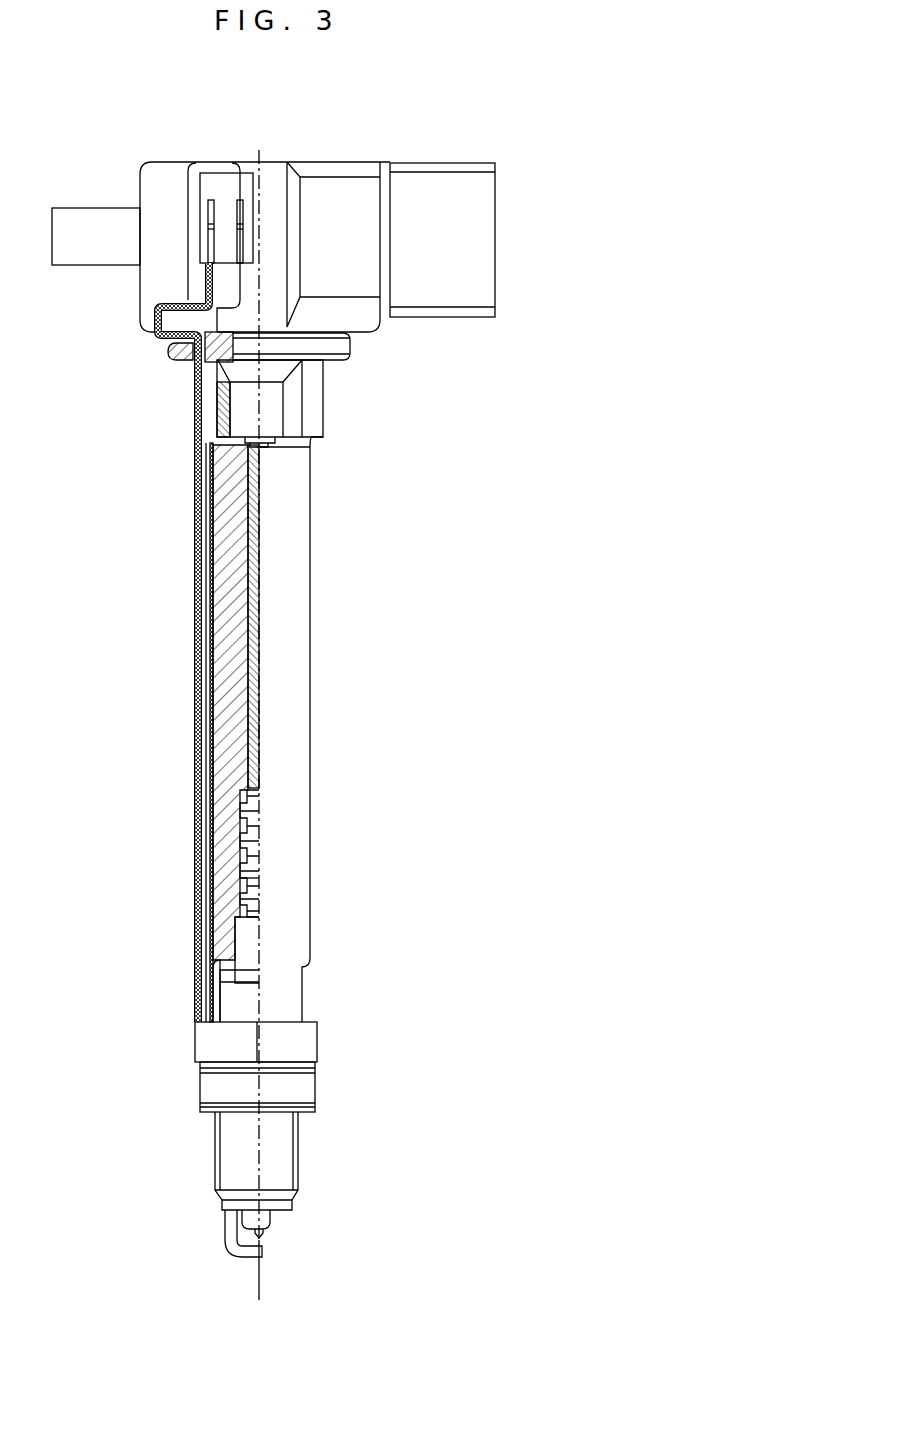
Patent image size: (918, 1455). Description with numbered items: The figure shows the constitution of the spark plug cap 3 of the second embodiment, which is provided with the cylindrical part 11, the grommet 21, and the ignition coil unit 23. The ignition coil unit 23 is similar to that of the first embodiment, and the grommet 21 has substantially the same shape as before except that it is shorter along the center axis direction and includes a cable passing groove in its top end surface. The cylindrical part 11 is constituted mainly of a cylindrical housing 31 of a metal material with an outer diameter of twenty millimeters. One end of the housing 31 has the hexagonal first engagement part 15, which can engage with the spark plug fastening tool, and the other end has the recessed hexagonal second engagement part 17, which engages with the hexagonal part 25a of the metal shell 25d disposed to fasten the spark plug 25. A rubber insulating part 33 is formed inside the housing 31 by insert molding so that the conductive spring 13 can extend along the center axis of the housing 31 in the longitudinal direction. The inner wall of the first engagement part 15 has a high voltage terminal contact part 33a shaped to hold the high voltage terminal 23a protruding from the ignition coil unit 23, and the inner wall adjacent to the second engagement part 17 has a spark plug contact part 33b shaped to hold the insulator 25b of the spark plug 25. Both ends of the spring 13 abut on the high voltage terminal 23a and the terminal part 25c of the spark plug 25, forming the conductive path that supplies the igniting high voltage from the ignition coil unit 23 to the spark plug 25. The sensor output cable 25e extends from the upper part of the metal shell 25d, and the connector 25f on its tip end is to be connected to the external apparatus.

The spark plug cap 3 is at (525, 166).
The cylindrical part 11 is at (352, 664).
The spring 13 is at (200, 525).
The first engagement part 15 is at (292, 425).
The second engagement part 17 is at (217, 1001).
The grommet 21 is at (193, 358).
The ignition coil unit 23 is at (158, 195).
The high voltage terminal 23a is at (272, 395).
The spark plug 25 is at (168, 1185).
The hexagonal part 25a is at (240, 1003).
The insulator 25b is at (250, 877).
The terminal part 25c is at (250, 802).
The metal shell 25d is at (208, 1042).
The sensor output cable 25e is at (147, 340).
The connector 25f is at (232, 183).
The housing 31 is at (200, 690).
The insulating part 33 is at (232, 596).
The high voltage terminal contact part 33a is at (228, 417).
The spark plug contact part 33b is at (250, 877).